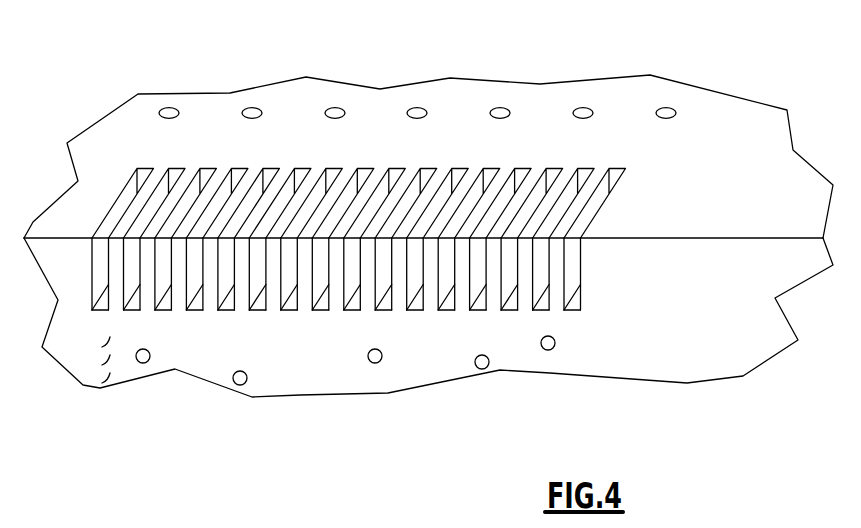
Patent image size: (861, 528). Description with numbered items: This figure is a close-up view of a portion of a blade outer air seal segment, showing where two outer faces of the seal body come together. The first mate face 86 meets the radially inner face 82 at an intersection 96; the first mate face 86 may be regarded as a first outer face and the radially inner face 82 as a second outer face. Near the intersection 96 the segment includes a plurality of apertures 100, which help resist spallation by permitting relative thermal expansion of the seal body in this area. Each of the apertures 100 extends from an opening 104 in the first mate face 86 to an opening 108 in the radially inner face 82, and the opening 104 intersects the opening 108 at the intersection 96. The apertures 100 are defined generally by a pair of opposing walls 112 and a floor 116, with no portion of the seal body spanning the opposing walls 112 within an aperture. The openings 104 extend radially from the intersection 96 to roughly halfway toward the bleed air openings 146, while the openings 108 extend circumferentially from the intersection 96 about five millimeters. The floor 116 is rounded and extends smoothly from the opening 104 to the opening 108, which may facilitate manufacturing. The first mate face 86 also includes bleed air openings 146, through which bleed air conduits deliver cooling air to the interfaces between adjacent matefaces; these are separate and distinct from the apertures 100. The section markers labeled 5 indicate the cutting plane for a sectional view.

The radially inner face 82 is at (677, 362).
The first mate face 86 is at (701, 150).
The intersection 96 is at (662, 238).
The apertures 100 is at (386, 229).
The opening in the first mate face 104 is at (593, 218).
The opening in the radially inner face 108 is at (580, 272).
The opposing walls 112 is at (565, 272).
The floor 116 is at (572, 301).
The bleed air openings 146 is at (505, 113).
The section line 5- 5 is at (418, 21).